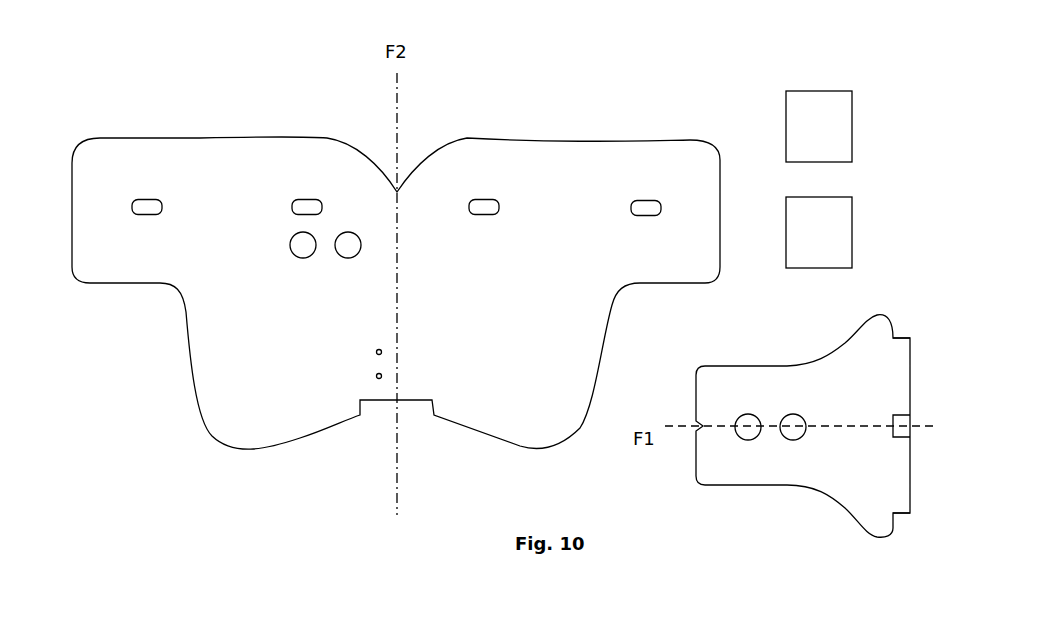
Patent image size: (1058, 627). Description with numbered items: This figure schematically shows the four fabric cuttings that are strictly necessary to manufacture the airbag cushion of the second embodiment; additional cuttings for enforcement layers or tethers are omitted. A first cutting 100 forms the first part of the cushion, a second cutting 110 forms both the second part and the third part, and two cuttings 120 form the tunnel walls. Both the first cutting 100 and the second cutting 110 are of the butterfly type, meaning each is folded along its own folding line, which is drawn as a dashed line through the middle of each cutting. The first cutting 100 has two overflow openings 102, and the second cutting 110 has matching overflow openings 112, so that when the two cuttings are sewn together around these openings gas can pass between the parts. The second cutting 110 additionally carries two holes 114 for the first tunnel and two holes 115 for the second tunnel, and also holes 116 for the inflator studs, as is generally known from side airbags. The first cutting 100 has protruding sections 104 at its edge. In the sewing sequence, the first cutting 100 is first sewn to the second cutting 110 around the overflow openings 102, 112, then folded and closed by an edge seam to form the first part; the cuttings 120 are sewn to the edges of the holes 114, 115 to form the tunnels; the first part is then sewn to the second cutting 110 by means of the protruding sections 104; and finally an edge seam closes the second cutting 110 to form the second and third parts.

The second cutting 110 is at (232, 180).
The overflow openings 112 is at (346, 248).
The holes for the first tunnel 114 is at (147, 208).
The holes for the second tunnel 115 is at (308, 204).
The holes for inflator studs 116 is at (377, 354).
The cuttings for the tunnel walls 120 is at (862, 179).
The first cutting 100 is at (823, 477).
The overflow openings 102 is at (791, 432).
The protruding sections 104 is at (927, 425).